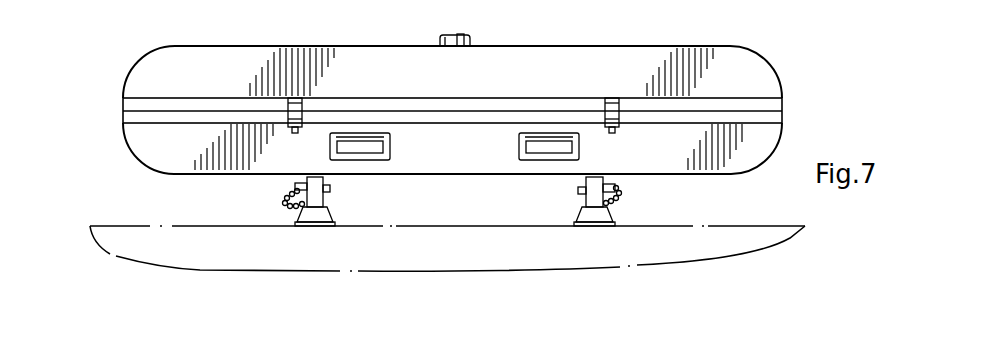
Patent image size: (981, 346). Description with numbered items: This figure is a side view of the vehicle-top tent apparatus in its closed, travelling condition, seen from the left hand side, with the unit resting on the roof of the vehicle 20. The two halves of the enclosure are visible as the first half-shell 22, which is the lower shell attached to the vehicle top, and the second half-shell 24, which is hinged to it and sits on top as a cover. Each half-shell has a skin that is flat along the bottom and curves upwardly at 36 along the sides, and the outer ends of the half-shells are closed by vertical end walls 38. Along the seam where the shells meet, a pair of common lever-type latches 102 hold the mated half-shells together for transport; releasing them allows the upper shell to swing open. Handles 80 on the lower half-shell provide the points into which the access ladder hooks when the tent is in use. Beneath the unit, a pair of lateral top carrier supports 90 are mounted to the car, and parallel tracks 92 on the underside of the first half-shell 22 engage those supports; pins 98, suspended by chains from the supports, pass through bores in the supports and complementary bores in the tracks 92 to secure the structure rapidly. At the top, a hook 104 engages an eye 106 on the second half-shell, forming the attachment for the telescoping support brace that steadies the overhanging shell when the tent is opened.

The vehicle 20 is at (143, 225).
The first half-shell 22 is at (793, 131).
The second half-shell 24 is at (786, 68).
The curved side portion of skin 36 is at (130, 150).
The vertical end wall 38 is at (286, 55).
The handle 80 is at (518, 152).
The lateral top carrier support 90 is at (316, 193).
The track 92 is at (327, 178).
The pin 98 is at (295, 186).
The lever-type latch 102 is at (306, 98).
The hook 104 is at (455, 40).
The eye 106 is at (468, 37).